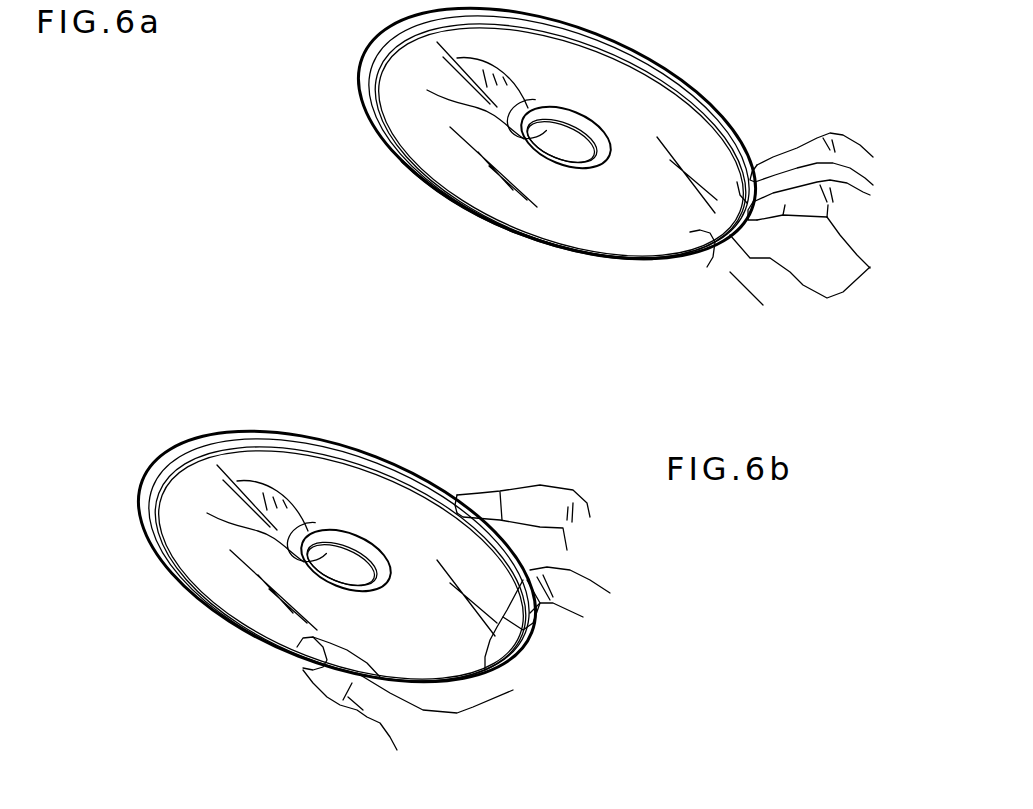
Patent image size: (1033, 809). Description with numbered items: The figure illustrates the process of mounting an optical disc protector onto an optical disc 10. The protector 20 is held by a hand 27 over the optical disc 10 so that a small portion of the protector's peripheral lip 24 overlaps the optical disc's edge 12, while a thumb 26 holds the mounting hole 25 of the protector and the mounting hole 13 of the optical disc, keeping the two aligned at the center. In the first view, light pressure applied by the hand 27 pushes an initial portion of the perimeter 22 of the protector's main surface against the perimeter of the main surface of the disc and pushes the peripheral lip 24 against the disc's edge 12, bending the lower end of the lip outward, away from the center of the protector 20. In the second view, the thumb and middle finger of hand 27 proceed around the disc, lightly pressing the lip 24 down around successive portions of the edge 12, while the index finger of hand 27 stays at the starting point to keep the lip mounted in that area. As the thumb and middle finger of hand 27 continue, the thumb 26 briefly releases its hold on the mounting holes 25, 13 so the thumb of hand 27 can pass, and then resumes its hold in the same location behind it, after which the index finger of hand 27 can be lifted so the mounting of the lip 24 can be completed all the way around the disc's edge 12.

In FIG. 6a, the optical disc 10 is at (370, 107).
In FIG. 6b, the optical disc 10 is at (353, 547).
In FIG. 6a, the edge 12 is at (367, 127).
In FIG. 6b, the edge 12 is at (137, 515).
In FIG. 6a, the mounting hole 13 is at (562, 140).
In FIG. 6a, the protector 20 is at (481, 18).
In FIG. 6b, the protector 20 is at (347, 450).
In FIG. 6a, the perimeter 22 is at (622, 259).
In FIG. 6a, the peripheral lip 24 is at (376, 92).
In FIG. 6b, the peripheral lip 24 is at (180, 448).
In FIG. 6a, the mounting hole 25 is at (598, 125).
In FIG. 6a, the thumb 26 is at (483, 125).
In FIG. 6b, the thumb 26 is at (222, 520).
In FIG. 6a, the hand 27 is at (760, 305).
In FIG. 6b, the hand 27 is at (377, 723).